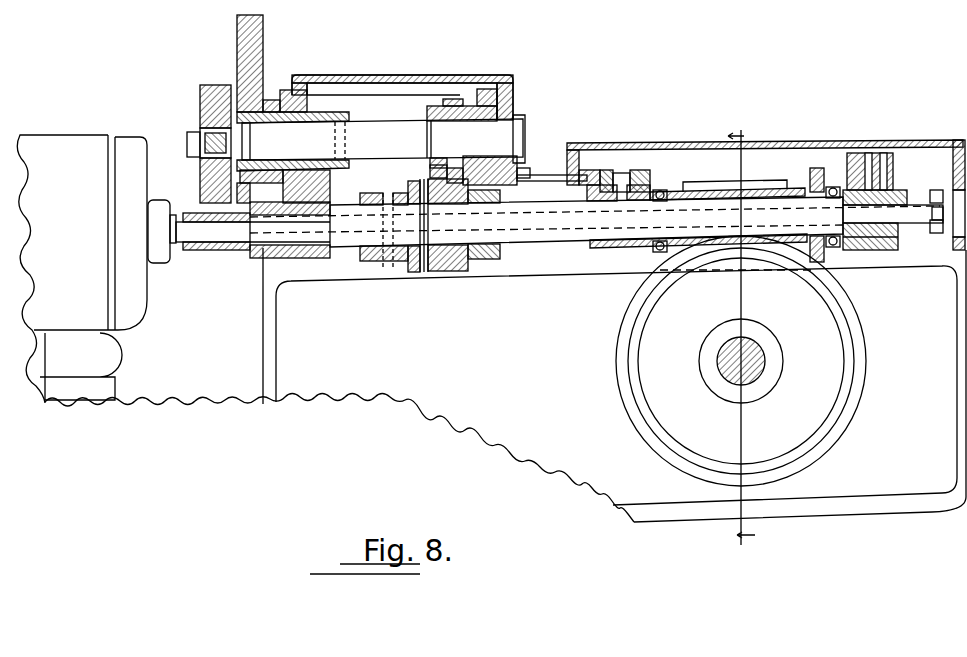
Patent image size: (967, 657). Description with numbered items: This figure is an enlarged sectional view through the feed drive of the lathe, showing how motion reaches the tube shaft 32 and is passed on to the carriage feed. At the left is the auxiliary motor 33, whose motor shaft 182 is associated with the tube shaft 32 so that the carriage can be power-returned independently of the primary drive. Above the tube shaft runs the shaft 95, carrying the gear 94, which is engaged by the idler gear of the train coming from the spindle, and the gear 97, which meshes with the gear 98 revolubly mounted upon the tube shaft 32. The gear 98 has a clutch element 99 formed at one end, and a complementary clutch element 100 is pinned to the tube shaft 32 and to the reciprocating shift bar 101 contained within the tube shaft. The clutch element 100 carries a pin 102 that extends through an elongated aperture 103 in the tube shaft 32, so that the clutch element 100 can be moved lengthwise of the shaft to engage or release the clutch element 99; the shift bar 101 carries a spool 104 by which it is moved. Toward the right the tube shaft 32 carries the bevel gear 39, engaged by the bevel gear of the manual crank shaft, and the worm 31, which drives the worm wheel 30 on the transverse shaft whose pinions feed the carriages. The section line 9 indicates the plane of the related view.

The auxiliary motor 33 is at (63, 140).
The motor shaft 182 is at (175, 215).
The gear 94 is at (209, 86).
The shaft 95 is at (383, 133).
The gear 97 is at (453, 100).
The section line 9- 9 is at (741, 337).
The worm 31 is at (700, 190).
The tube shaft 32 is at (765, 200).
The bevel gear 39 is at (816, 181).
The shift bar 101 is at (908, 205).
The spool 104 is at (937, 190).
The aperture 103 is at (370, 268).
The pin 102 is at (387, 262).
The clutch element 100 is at (415, 268).
The clutch element 99 is at (430, 262).
The gear 98 is at (460, 268).
The worm wheel 30 is at (774, 458).